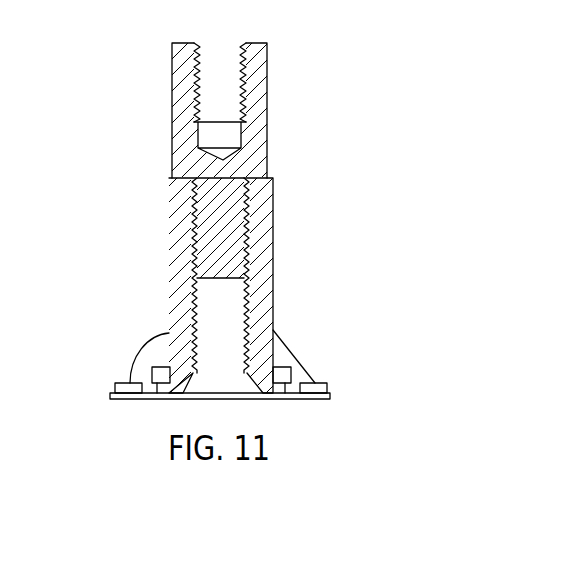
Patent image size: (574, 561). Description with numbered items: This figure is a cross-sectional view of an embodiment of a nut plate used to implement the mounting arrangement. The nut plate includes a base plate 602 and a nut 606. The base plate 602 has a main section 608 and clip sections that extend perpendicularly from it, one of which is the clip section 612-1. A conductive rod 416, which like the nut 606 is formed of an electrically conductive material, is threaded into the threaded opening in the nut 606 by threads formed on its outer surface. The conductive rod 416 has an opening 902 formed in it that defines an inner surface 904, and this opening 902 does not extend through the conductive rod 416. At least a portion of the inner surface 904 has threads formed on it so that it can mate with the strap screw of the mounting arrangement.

The conductive rod 416 is at (217, 159).
The inner surface 904 is at (205, 44).
The opening 902 is at (227, 38).
The nut 606 is at (169, 295).
The base plate 602 is at (330, 394).
The clip section 612-1 is at (131, 372).
The main section 608 is at (293, 393).